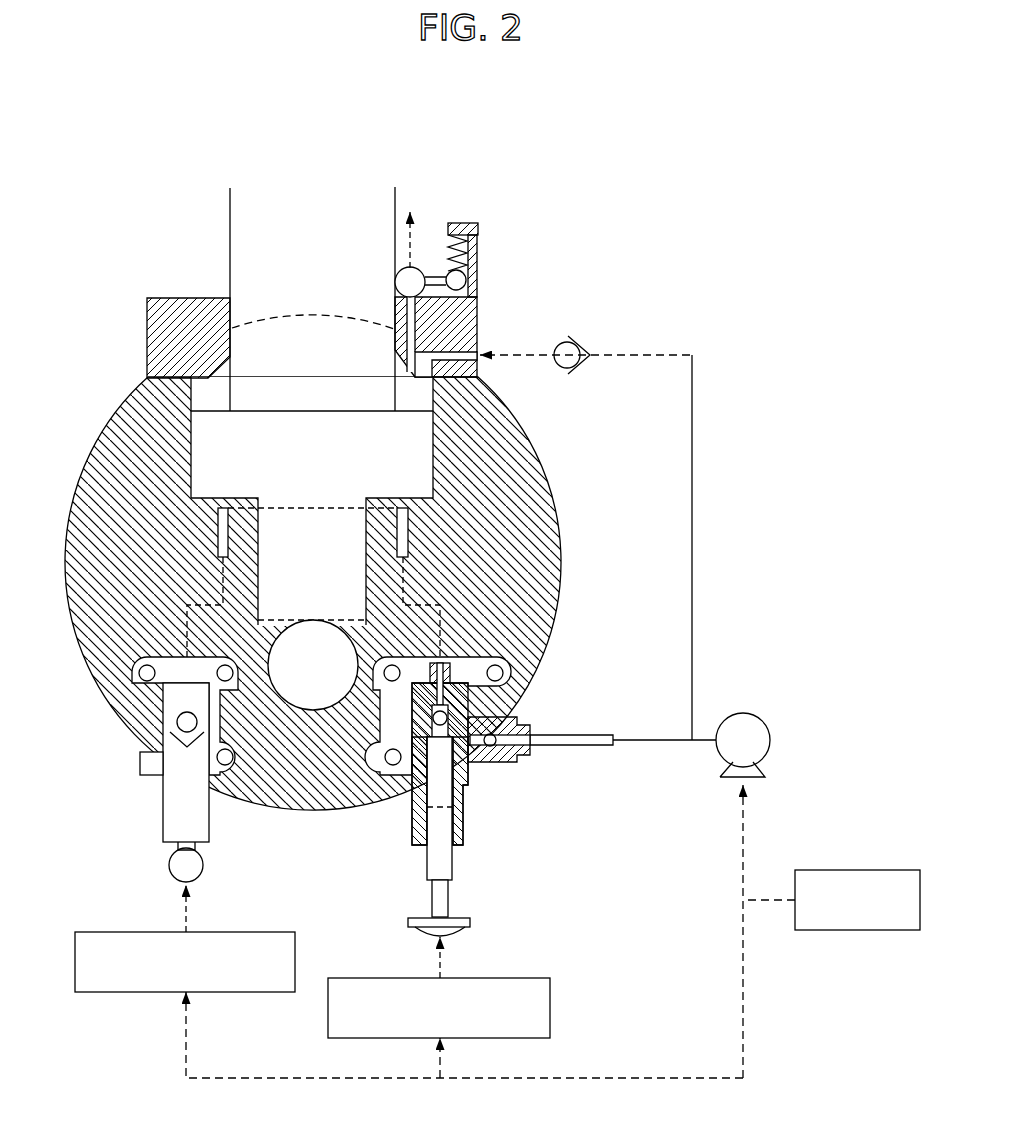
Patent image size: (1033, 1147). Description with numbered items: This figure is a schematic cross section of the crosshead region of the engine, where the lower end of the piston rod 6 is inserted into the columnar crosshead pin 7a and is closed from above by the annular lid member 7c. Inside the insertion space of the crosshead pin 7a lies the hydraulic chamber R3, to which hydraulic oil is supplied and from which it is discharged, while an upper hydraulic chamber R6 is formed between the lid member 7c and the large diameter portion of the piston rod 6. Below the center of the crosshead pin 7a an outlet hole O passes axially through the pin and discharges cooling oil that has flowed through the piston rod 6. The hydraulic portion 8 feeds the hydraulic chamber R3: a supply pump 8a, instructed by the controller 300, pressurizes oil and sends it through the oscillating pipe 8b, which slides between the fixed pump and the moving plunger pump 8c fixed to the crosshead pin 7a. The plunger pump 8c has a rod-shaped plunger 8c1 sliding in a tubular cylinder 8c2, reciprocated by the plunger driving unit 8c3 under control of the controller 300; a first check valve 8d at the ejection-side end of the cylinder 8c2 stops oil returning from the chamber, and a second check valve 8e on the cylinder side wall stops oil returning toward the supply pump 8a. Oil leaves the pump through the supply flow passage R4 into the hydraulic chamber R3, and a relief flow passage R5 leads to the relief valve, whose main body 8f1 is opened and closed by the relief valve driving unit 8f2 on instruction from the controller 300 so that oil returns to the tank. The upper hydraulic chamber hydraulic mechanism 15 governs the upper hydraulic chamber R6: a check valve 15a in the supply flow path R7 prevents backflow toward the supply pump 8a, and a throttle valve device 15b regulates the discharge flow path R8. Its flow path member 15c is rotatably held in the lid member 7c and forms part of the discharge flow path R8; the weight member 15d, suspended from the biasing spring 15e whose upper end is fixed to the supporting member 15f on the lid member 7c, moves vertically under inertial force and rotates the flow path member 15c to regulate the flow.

The piston rod 6 is at (230, 214).
The crosshead pin 7a is at (110, 442).
The lid member 7c is at (468, 313).
The hydraulic portion 8 is at (97, 745).
The supply pump 8a is at (768, 735).
The oscillating pipe 8b is at (648, 740).
The plunger pump 8c is at (478, 796).
The plunger 8c1 is at (445, 897).
The cylinder 8c2 is at (463, 830).
The plunger driving unit 8c3 is at (552, 1005).
The first check valve 8d is at (440, 705).
The second check valve 8e is at (498, 762).
The main body 8f1 is at (163, 813).
The relief valve driving unit 8f2 is at (125, 932).
The upper hydraulic chamber hydraulic mechanism 15 is at (505, 271).
The check valve 15a is at (583, 342).
The throttle valve device 15b is at (400, 262).
The flow path member 15c is at (396, 280).
The weight member 15d is at (465, 278).
The biasing spring 15e is at (470, 242).
The supporting member 15f is at (465, 225).
The controller 300 is at (870, 870).
The outlet hole O is at (322, 708).
The hydraulic chamber R3 is at (440, 507).
The supply flow passage R4 is at (408, 553).
The relief flow passage R5 is at (217, 547).
The upper hydraulic chamber R6 is at (207, 392).
The supply flow path R7 is at (692, 555).
The discharge flow path R8 is at (412, 237).